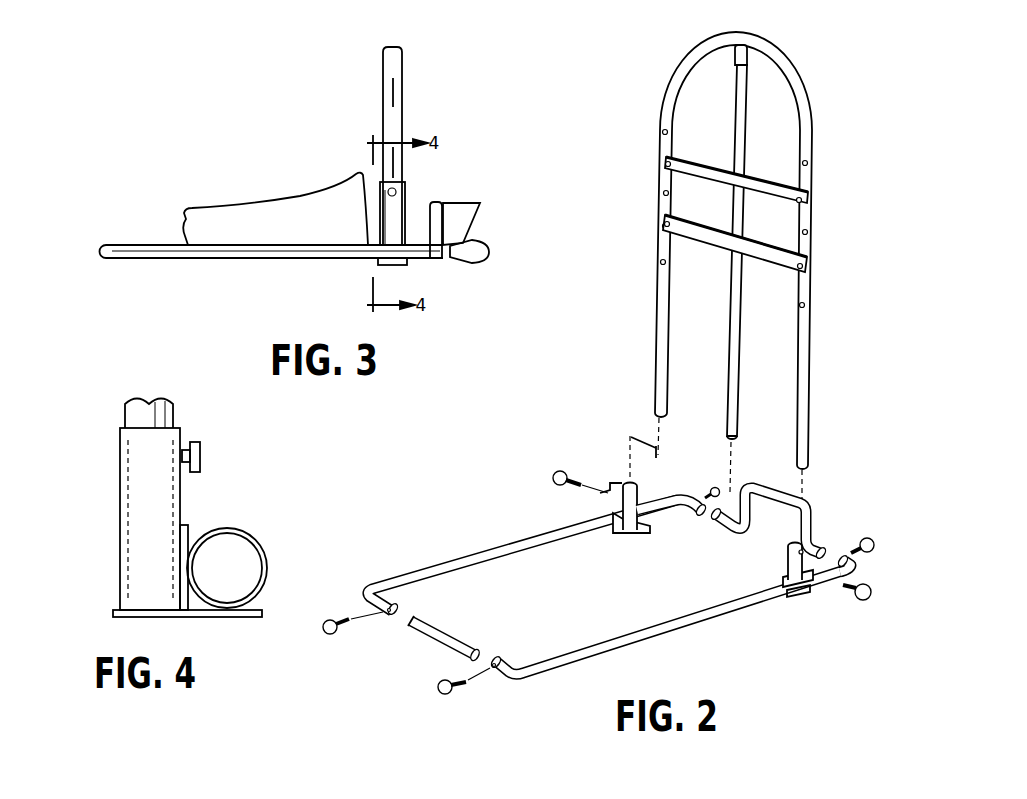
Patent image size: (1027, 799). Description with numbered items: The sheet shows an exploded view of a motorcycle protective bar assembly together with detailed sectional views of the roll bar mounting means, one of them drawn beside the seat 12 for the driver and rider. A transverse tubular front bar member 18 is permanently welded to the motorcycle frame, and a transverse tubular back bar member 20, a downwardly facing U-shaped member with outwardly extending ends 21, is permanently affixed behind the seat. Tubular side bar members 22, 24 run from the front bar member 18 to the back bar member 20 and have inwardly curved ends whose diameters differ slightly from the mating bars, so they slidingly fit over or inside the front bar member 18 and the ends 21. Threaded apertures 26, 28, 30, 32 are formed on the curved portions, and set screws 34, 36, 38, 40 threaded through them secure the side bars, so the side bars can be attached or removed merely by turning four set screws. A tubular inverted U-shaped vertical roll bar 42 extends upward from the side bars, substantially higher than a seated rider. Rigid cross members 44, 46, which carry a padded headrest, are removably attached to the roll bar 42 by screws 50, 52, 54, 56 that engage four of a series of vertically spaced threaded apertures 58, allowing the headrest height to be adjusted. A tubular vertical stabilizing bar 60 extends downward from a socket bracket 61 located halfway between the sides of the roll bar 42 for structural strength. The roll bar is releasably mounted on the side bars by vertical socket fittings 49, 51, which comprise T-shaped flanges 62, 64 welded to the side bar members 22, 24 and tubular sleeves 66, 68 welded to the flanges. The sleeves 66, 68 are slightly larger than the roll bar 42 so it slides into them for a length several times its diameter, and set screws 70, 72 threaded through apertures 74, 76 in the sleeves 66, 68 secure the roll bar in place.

In FIG. 3, the seat 12 is at (230, 212).
In FIG. 2, the front bar member 18 is at (437, 632).
In FIG. 3, the back bar member 20 is at (443, 203).
In FIG. 2, the back bar member 20 is at (786, 521).
In FIG. 2, the outwardly extending ends 21 is at (725, 520).
In FIG. 3, the side bar member 22 is at (215, 258).
In FIG. 4, the side bar member 22 is at (250, 540).
In FIG. 2, the side bar member 22 is at (695, 639).
In FIG. 2, the side bar member 24 is at (515, 583).
In FIG. 2, the threaded aperture 26 is at (494, 672).
In FIG. 2, the threaded aperture 28 is at (850, 560).
In FIG. 2, the threaded aperture 30 is at (387, 614).
In FIG. 2, the threaded aperture 32 is at (683, 500).
In FIG. 2, the set screw 34 is at (440, 690).
In FIG. 2, the set screw 36 is at (873, 537).
In FIG. 2, the set screw 38 is at (717, 487).
In FIG. 2, the set screw 40 is at (328, 634).
In FIG. 3, the roll bar 42 is at (402, 67).
In FIG. 4, the roll bar 42 is at (173, 412).
In FIG. 2, the roll bar 42 is at (757, 247).
In FIG. 2, the cross member 44 is at (729, 188).
In FIG. 2, the cross member 46 is at (729, 249).
In FIG. 4, the socket fitting 49 is at (163, 499).
In FIG. 2, the socket fitting 49 is at (763, 579).
In FIG. 2, the screw 50 is at (729, 249).
In FIG. 2, the socket fitting 51 is at (610, 538).
In FIG. 2, the screw 52 is at (728, 170).
In FIG. 2, the screw 54 is at (665, 163).
In FIG. 2, the screw 56 is at (665, 224).
In FIG. 2, the threaded apertures 58 is at (810, 160).
In FIG. 2, the stabilizing bar 60 is at (745, 133).
In FIG. 2, the socket bracket 61 is at (737, 58).
In FIG. 3, the T-shaped flange 62 is at (402, 264).
In FIG. 4, the T-shaped flange 62 is at (190, 530).
In FIG. 2, the T-shaped flange 62 is at (795, 600).
In FIG. 2, the T-shaped flange 64 is at (640, 533).
In FIG. 3, the tubular sleeve 66 is at (405, 213).
In FIG. 4, the tubular sleeve 66 is at (120, 518).
In FIG. 2, the tubular sleeve 66 is at (788, 555).
In FIG. 2, the tubular sleeve 68 is at (623, 500).
In FIG. 3, the set screw 70 is at (405, 187).
In FIG. 4, the set screw 70 is at (200, 453).
In FIG. 2, the set screw 70 is at (860, 603).
In FIG. 2, the set screw 72 is at (553, 472).
In FIG. 2, the aperture 74 is at (805, 547).
In FIG. 2, the aperture 76 is at (622, 480).